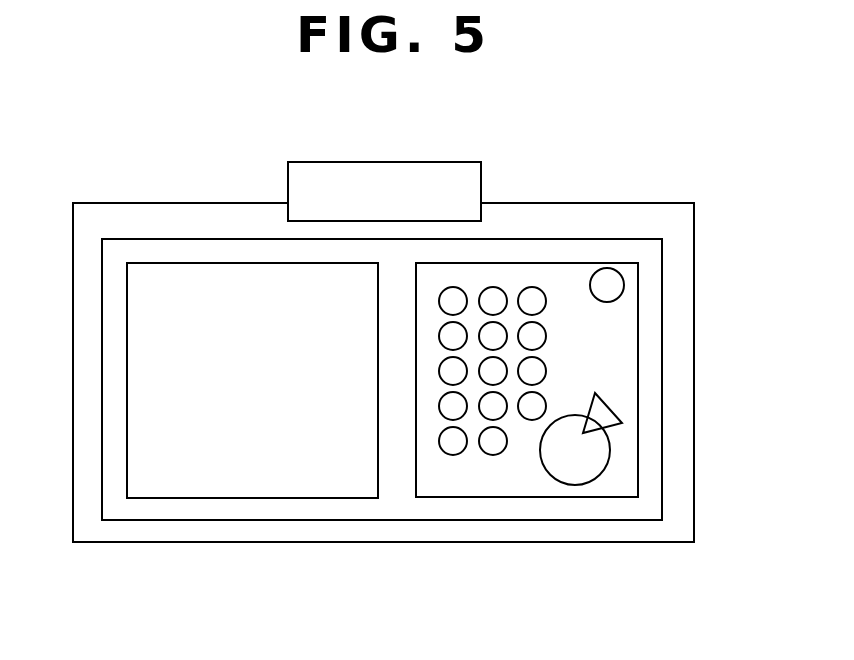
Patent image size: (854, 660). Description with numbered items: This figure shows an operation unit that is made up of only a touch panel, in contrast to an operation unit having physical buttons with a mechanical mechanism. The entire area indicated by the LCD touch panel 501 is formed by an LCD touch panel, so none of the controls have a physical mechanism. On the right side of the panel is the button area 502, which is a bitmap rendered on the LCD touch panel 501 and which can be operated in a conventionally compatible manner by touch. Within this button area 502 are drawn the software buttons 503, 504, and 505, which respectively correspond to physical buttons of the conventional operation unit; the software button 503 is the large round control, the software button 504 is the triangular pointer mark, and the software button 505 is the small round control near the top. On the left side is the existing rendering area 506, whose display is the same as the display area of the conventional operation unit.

The LCD touch panel 501 is at (662, 327).
The button area 502 is at (662, 465).
The software button 503 is at (595, 478).
The software button 504 is at (613, 405).
The software button 505 is at (624, 285).
The existing rendering area 506 is at (212, 490).